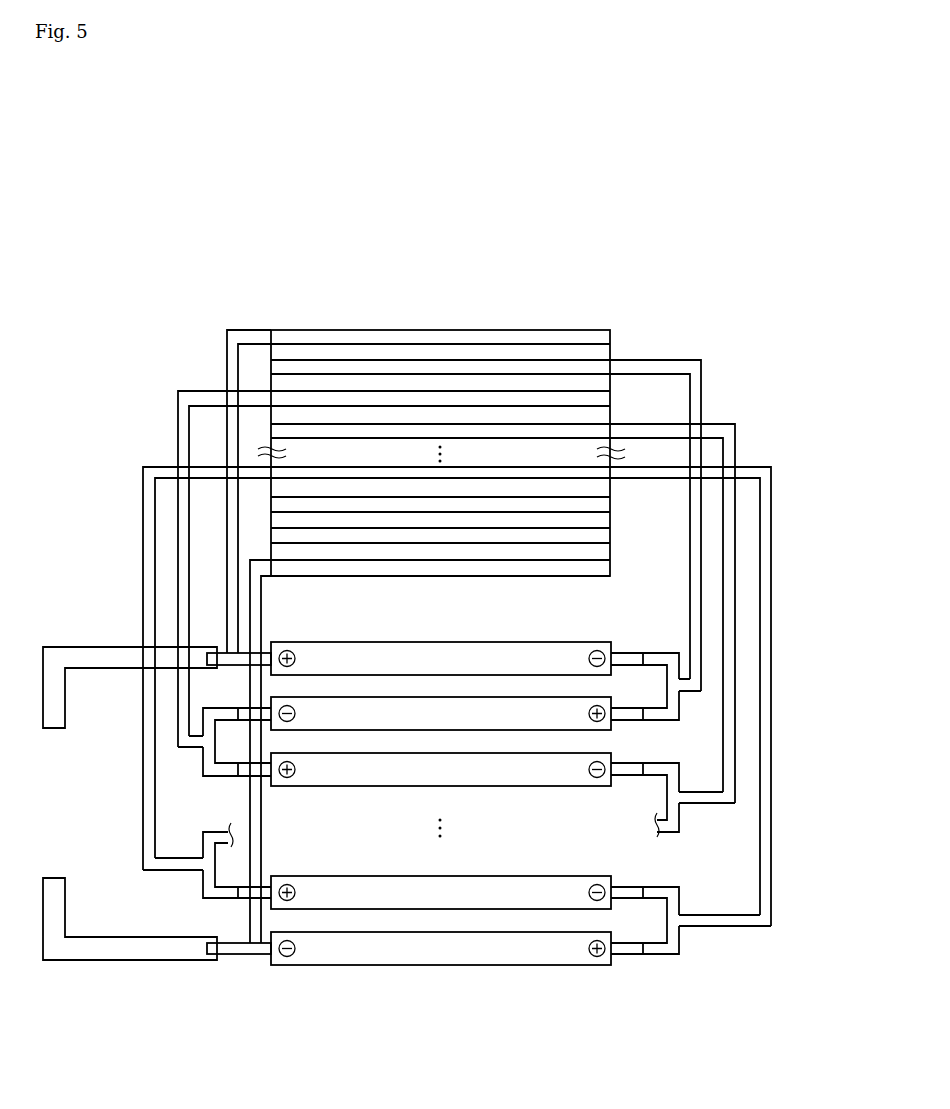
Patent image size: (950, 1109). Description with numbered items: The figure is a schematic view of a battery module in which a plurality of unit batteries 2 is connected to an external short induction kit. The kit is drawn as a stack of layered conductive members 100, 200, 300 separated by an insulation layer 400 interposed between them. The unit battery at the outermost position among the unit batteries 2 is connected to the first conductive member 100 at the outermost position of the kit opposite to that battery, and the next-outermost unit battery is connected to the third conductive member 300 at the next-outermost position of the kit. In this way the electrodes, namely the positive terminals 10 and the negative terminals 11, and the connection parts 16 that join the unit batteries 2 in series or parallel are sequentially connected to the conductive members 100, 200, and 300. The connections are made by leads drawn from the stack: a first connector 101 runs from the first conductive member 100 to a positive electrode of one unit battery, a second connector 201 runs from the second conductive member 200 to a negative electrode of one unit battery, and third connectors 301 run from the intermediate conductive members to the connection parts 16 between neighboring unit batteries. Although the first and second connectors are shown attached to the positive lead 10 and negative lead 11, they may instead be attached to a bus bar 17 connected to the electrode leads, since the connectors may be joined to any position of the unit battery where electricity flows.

The unit batteries 2 is at (463, 950).
The positive terminal 10 is at (238, 662).
The negative terminal 11 is at (247, 950).
The connection part 16 is at (675, 706).
The bus bar 17 is at (132, 950).
The first conductive member 100 is at (428, 338).
The first lead tab 101 is at (231, 355).
The second conductive member 200 is at (605, 577).
The second lead tab 201 is at (263, 803).
The third conductive member 300 is at (313, 370).
The intermediate lead tabs 301 is at (148, 472).
The separator 400 is at (368, 355).